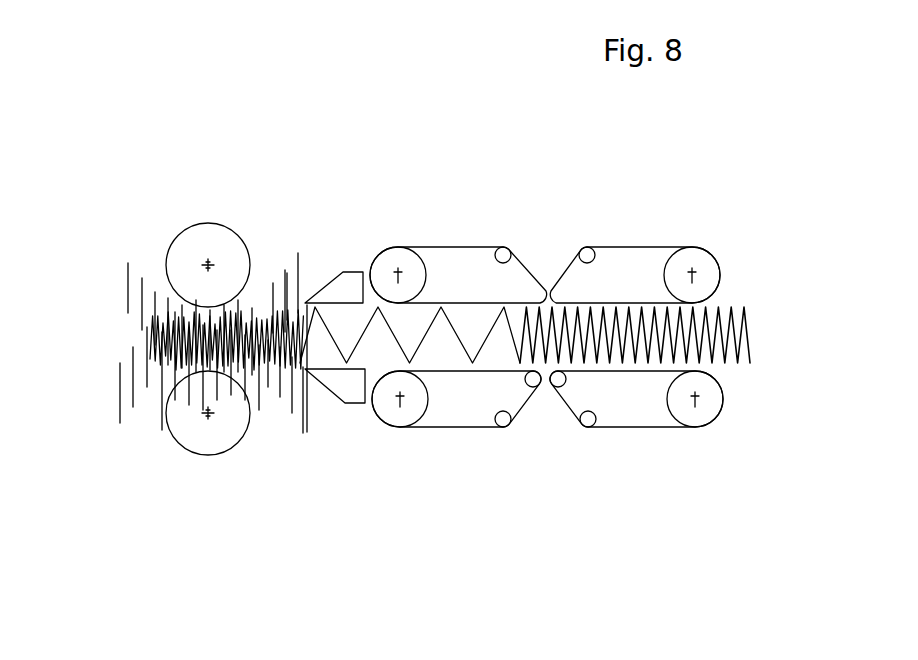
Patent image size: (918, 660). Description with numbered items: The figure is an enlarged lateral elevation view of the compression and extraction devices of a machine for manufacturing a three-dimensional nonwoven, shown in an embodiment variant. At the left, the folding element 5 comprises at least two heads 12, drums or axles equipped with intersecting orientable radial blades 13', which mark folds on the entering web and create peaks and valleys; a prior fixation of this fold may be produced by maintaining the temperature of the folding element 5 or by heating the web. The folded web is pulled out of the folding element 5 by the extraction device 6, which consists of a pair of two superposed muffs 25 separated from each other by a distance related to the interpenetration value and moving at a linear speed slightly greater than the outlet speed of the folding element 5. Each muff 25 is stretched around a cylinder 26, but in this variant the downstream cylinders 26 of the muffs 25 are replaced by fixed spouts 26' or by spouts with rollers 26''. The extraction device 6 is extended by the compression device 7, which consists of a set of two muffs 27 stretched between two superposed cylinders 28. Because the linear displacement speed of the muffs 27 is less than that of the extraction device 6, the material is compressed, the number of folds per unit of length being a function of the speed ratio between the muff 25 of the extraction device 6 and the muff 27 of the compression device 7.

The folding element 5 is at (210, 213).
The head 12 is at (148, 408).
The orientable radial blades 13' is at (181, 312).
The extraction device 6 is at (428, 347).
The muffs 25 is at (447, 247).
The cylinders 26 is at (358, 348).
The fixed spouts 26' is at (523, 229).
The spouts with rollers 26'' is at (532, 460).
The compression device 7 is at (679, 344).
The muffs 27 is at (652, 247).
The cylinders 28 is at (710, 262).